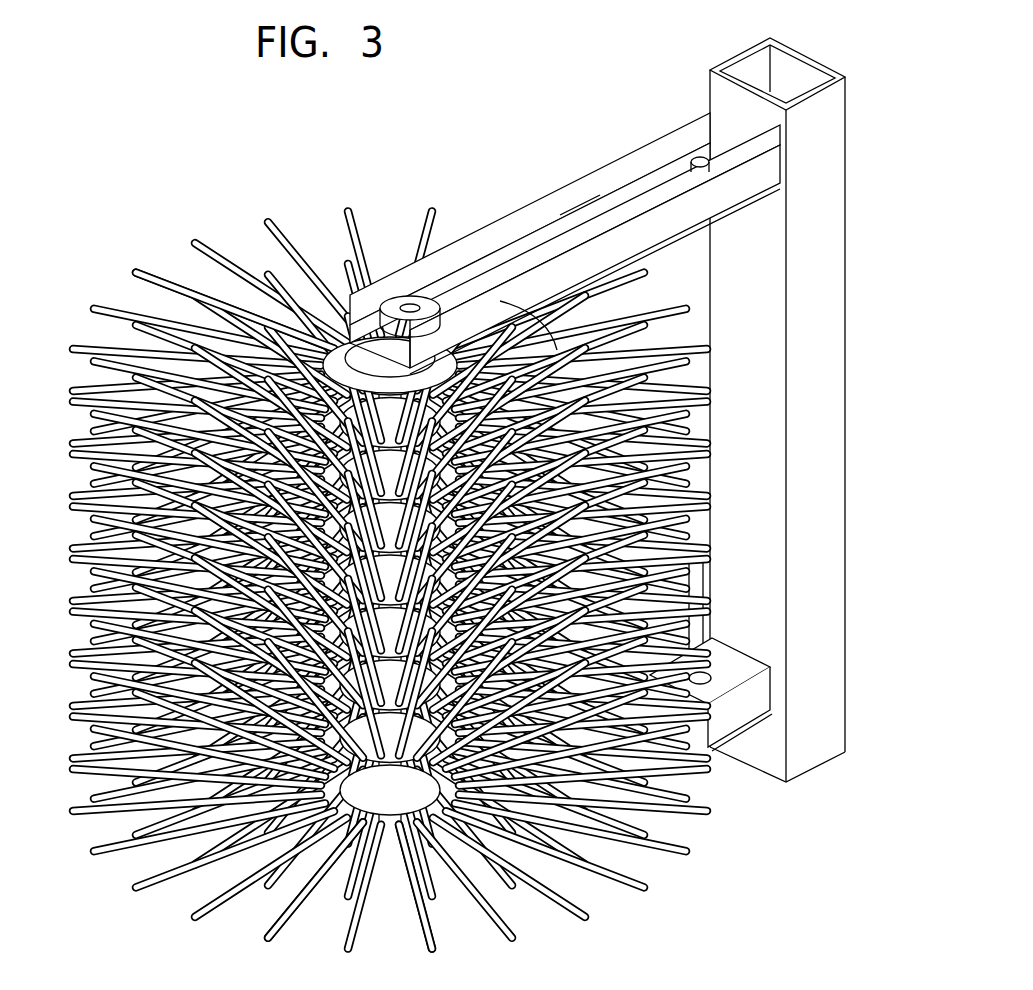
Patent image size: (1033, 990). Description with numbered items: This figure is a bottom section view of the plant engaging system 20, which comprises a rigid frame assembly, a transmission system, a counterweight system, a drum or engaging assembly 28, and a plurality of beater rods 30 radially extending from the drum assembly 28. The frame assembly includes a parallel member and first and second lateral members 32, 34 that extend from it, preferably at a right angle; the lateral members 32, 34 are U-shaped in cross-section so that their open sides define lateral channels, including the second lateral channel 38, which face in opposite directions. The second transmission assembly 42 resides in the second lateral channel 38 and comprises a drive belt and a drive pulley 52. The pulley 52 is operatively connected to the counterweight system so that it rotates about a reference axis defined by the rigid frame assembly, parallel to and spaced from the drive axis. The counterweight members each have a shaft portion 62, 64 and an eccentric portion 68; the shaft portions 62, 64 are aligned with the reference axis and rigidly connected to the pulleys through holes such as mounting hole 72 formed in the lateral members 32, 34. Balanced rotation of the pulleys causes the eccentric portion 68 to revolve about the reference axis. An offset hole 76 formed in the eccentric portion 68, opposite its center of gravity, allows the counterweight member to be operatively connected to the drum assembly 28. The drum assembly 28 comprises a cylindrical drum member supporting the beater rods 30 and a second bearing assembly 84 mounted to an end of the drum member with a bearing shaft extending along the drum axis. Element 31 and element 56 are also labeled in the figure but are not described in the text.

The plant engaging system 20 is at (408, 531).
The drum assembly 28 is at (333, 838).
The beater rods 30 is at (115, 300).
The post 31 is at (820, 145).
The first lateral member 32 is at (435, 865).
The second lateral member 34 is at (600, 180).
The second lateral channel 38 is at (575, 205).
The second transmission assembly 42 is at (560, 205).
The drive pulley 52 is at (510, 325).
The shaft 56 is at (402, 300).
The shaft portion 62 is at (505, 320).
The shaft portion 64 is at (395, 312).
The eccentric portion 68 is at (480, 345).
The mounting hole 72 is at (383, 350).
The second offset hole 76 is at (318, 335).
The second bearing assembly 84 is at (136, 270).